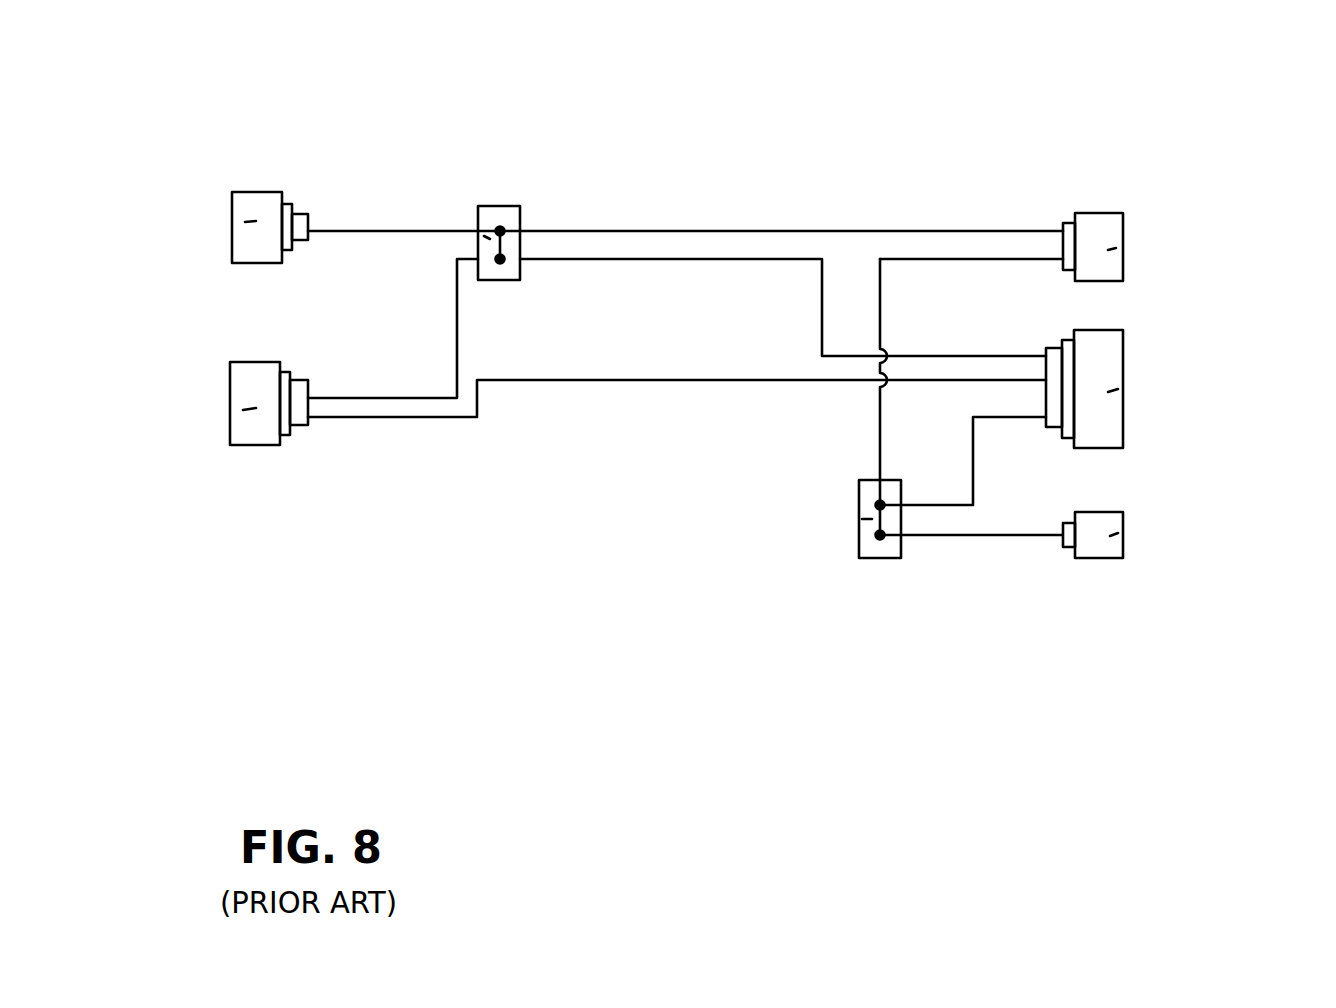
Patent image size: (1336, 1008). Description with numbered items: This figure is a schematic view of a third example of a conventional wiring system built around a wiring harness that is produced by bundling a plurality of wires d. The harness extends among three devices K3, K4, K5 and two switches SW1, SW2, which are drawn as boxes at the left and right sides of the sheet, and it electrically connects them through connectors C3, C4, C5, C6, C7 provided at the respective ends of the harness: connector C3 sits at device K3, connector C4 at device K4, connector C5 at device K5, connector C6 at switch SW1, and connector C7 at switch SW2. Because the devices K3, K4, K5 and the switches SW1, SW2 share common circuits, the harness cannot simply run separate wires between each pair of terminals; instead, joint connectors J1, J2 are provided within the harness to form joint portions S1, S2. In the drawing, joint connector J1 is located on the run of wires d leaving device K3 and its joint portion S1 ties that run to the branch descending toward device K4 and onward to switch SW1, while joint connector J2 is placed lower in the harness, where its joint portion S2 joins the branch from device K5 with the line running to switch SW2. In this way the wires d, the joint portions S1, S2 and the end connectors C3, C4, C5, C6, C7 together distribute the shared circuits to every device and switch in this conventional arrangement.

The device K3 is at (232, 222).
The connector C3 is at (300, 213).
The joint portion S1 is at (478, 229).
The joint connector J1 is at (510, 206).
The wire d is at (676, 230).
The connector C6 is at (1063, 222).
The switch SW1 is at (1123, 247).
The connector C5 is at (1046, 350).
The device K5 is at (1123, 387).
The device K4 is at (230, 405).
The connector C4 is at (300, 425).
The joint portion S2 is at (858, 520).
The joint connector J2 is at (875, 560).
The connector C7 is at (1063, 547).
The switch SW2 is at (1123, 532).